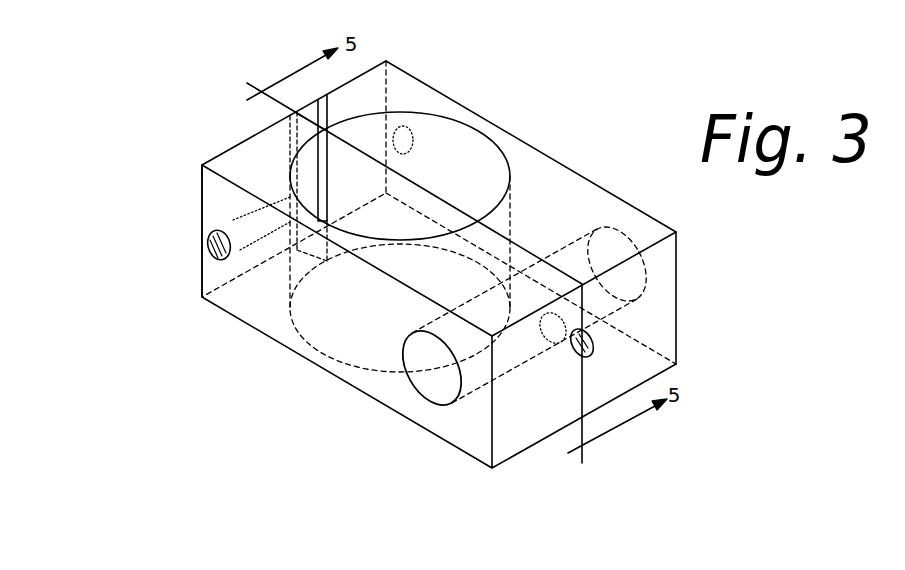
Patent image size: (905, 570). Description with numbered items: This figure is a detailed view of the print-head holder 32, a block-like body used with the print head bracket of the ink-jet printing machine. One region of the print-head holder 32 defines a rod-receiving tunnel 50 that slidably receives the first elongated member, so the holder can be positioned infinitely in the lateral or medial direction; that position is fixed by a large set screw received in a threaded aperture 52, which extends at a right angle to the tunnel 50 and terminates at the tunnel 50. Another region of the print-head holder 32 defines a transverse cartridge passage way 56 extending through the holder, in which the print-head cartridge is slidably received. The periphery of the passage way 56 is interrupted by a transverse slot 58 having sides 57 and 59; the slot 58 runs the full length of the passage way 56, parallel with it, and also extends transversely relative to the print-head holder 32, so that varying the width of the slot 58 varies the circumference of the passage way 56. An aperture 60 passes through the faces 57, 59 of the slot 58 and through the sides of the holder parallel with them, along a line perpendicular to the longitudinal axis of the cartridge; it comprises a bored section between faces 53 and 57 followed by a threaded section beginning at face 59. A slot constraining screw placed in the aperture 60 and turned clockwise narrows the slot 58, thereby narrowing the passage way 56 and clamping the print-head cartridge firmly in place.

The print-head holder 32 is at (537, 417).
The rod-receiving tunnel 50 is at (433, 388).
The threaded aperture 52 is at (585, 353).
The face 53 is at (218, 192).
The transverse cartridge passage way 56 is at (483, 130).
The side of slot 57 is at (296, 113).
The transverse slot 58 is at (294, 151).
The side of slot 59 is at (329, 108).
The aperture 60 is at (235, 219).